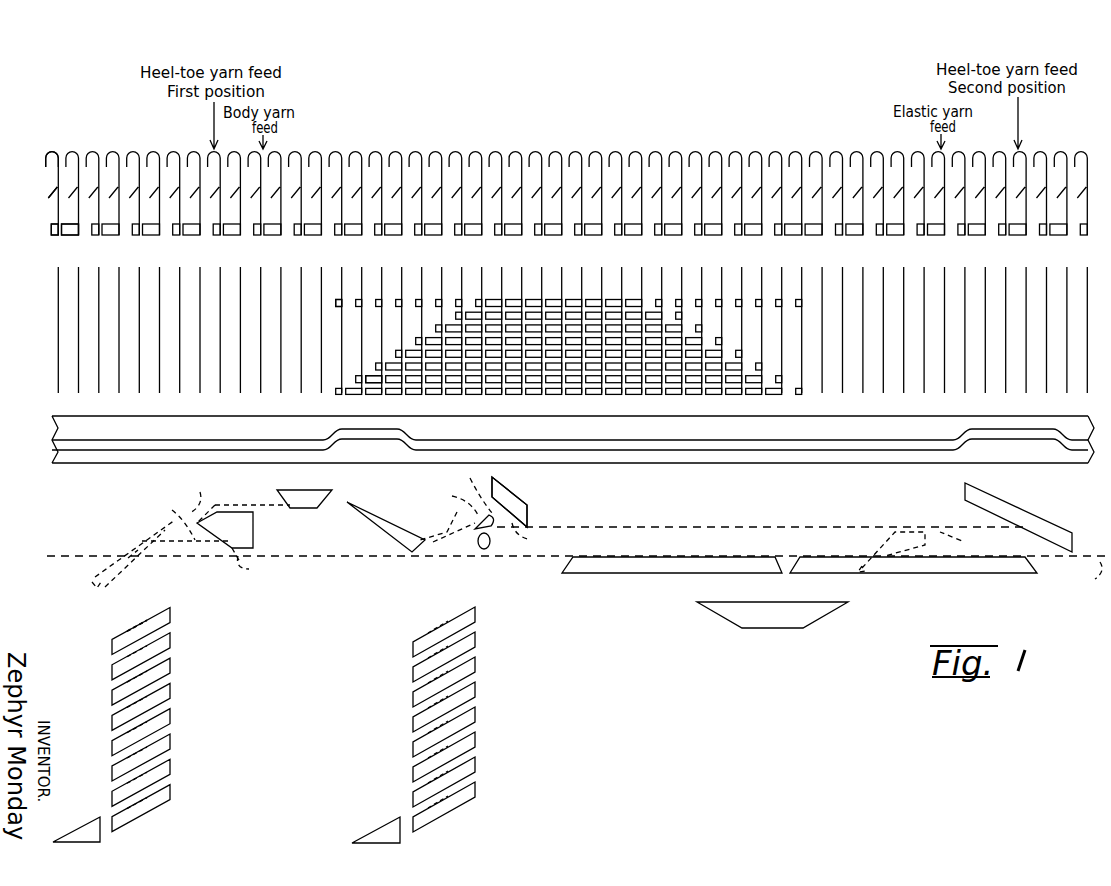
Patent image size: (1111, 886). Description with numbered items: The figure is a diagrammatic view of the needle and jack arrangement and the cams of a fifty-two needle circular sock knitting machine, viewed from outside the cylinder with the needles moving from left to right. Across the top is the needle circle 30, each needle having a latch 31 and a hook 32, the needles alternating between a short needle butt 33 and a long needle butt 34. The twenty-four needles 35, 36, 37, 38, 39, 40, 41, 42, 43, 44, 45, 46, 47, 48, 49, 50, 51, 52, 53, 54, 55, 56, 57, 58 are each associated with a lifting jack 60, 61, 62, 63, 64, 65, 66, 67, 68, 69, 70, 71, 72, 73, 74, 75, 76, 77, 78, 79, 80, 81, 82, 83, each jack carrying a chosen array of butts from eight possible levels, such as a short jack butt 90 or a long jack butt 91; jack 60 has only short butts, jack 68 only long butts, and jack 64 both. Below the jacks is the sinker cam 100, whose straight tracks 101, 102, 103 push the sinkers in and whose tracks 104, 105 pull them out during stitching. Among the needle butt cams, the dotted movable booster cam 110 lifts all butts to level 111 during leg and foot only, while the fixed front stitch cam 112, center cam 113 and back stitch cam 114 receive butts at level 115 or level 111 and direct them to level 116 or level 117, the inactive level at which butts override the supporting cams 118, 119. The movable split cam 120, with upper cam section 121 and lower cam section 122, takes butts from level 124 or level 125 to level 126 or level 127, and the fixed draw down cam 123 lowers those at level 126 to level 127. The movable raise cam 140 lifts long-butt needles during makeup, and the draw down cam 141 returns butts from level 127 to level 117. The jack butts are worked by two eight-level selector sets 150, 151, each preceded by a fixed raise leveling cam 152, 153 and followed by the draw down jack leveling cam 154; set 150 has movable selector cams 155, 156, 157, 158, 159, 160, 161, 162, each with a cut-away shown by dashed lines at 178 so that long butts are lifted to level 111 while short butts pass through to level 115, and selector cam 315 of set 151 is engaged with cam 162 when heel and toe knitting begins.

The needle cylinder 30 is at (48, 170).
The latch 31 is at (52, 190).
The hook 32 is at (50, 153).
The short needle butt 33 is at (48, 230).
The long needle butt 34 is at (70, 238).
The needle 35 is at (337, 152).
The needle 36 is at (357, 152).
The needle 37 is at (377, 152).
The needle 38 is at (397, 152).
The needle 39 is at (417, 152).
The needle 40 is at (437, 152).
The needle 41 is at (457, 152).
The needle 42 is at (477, 152).
The needle 43 is at (497, 152).
The needle 44 is at (517, 152).
The needle 45 is at (537, 152).
The needle 46 is at (557, 152).
The needle 47 is at (577, 152).
The needle 48 is at (597, 152).
The needle 49 is at (617, 152).
The needle 50 is at (637, 152).
The needle 51 is at (657, 152).
The needle 52 is at (677, 152).
The needle 53 is at (697, 152).
The needle 54 is at (717, 152).
The needle 55 is at (737, 152).
The needle 56 is at (757, 152).
The needle 57 is at (777, 152).
The needle 58 is at (797, 152).
The lifting jack 60 is at (340, 268).
The lifting jack 61 is at (360, 268).
The lifting jack 62 is at (380, 268).
The lifting jack 63 is at (400, 268).
The lifting jack 64 is at (420, 268).
The lifting jack 65 is at (440, 268).
The lifting jack 66 is at (460, 268).
The lifting jack 67 is at (480, 268).
The lifting jack 68 is at (500, 268).
The lifting jack 69 is at (520, 268).
The lifting jack 70 is at (540, 268).
The lifting jack 71 is at (560, 268).
The lifting jack 72 is at (580, 268).
The lifting jack 73 is at (600, 268).
The lifting jack 74 is at (620, 268).
The lifting jack 75 is at (640, 268).
The lifting jack 76 is at (660, 268).
The lifting jack 77 is at (680, 268).
The lifting jack 78 is at (700, 268).
The lifting jack 79 is at (720, 268).
The lifting jack 80 is at (740, 268).
The lifting jack 81 is at (760, 268).
The lifting jack 82 is at (780, 268).
The lifting jack 83 is at (800, 268).
The short jack butt 90 is at (336, 306).
The long jack butt 91 is at (368, 379).
The sinker cam 100 is at (573, 450).
The straight track 101 is at (155, 445).
The straight track 102 is at (738, 443).
The straight track 103 is at (1076, 442).
The track 104 is at (395, 436).
The track 105 is at (975, 436).
The movable booster cam 110 is at (130, 569).
The needle butt level 111 is at (183, 496).
The front stitch cam 112 is at (254, 536).
The center cam 113 is at (312, 491).
The back stitch cam 114 is at (385, 518).
The needle butt level 115 is at (176, 512).
The needle butt level 116 is at (233, 504).
The needle butt level 117 is at (667, 567).
The needle butt supporting cam 118 is at (595, 574).
The needle butt supporting cam 119 is at (998, 573).
The movable split cam 120 is at (483, 480).
The upper cam section 121 is at (476, 526).
The lower cam section 122 is at (480, 548).
The fixed draw down cam 123 is at (530, 511).
The needle butt level 124 is at (458, 501).
The needle butt level 125 is at (447, 523).
The needle butt level 126 is at (469, 492).
The needle butt level 127 is at (751, 536).
The movable raise cam 140 is at (886, 531).
The draw down cam 141 is at (1015, 513).
The jack butt selector set 150 is at (137, 716).
The jack butt selector set 151 is at (481, 719).
The fixed jack butt raise leveling cam 152 is at (92, 828).
The fixed jack butt raise leveling cam 153 is at (383, 830).
The fixed draw down jack leveling cam 154 is at (810, 616).
The selector cam 155 is at (172, 609).
The selector cam 156 is at (172, 634).
The selector cam 157 is at (172, 660).
The selector cam 158 is at (172, 685).
The selector cam 159 is at (172, 710).
The selector cam 160 is at (172, 736).
The selector cam 161 is at (172, 761).
The selector cam 162 is at (172, 786).
The cut-away portion indication 178 is at (145, 626).
The jack butt cam 315 is at (458, 806).